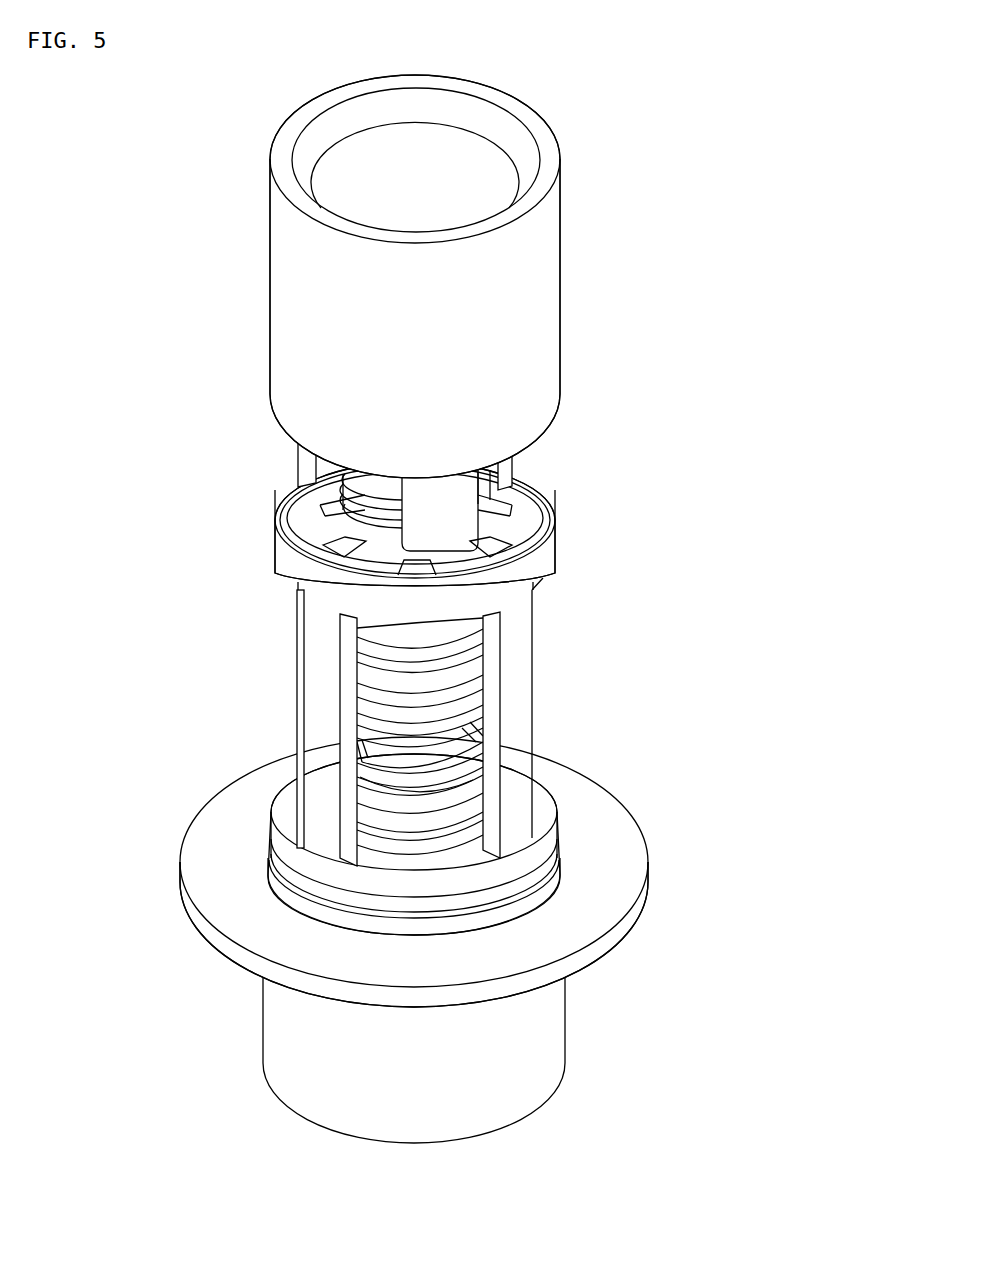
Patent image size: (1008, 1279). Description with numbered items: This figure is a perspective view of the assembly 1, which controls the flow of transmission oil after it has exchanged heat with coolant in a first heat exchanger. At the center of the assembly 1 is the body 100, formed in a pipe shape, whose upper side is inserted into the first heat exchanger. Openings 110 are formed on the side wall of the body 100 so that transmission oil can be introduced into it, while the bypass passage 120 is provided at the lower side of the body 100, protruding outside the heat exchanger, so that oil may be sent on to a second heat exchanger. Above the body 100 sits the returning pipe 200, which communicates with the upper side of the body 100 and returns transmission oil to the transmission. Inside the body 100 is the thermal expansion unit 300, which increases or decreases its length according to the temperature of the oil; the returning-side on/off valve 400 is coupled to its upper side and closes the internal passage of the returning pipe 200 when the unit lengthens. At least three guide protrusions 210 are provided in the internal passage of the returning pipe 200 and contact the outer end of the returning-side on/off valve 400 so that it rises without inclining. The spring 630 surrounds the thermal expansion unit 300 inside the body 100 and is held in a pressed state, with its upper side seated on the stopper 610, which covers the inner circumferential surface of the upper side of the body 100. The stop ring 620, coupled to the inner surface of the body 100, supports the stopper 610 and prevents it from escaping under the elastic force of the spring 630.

The assembly 1 is at (652, 166).
The body 100 is at (320, 653).
The openings 110 is at (348, 700).
The bypass passage 120 is at (548, 1035).
The returning pipe 200 is at (553, 300).
The guide protrusions 210 is at (310, 468).
The thermal expansion unit 300 is at (417, 752).
The returning-side on/off valve 400 is at (310, 568).
The stopper 610 is at (315, 517).
The stop ring 620 is at (302, 493).
The spring 630 is at (417, 773).